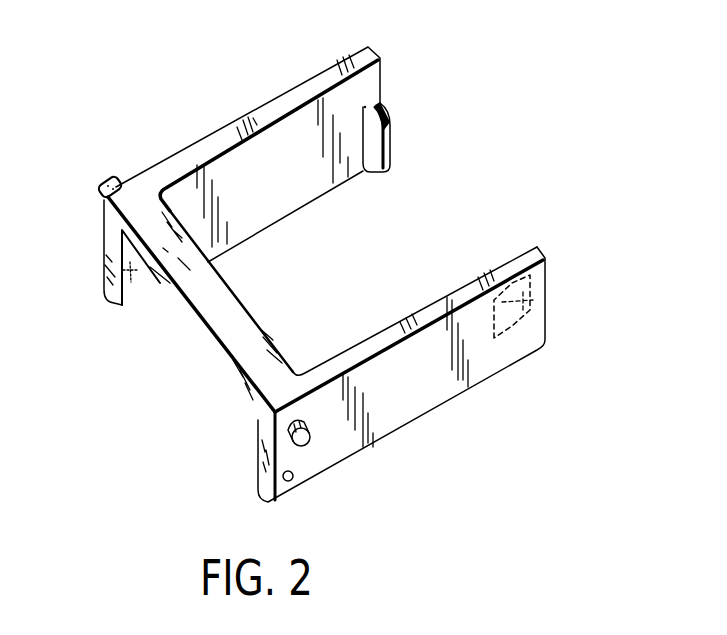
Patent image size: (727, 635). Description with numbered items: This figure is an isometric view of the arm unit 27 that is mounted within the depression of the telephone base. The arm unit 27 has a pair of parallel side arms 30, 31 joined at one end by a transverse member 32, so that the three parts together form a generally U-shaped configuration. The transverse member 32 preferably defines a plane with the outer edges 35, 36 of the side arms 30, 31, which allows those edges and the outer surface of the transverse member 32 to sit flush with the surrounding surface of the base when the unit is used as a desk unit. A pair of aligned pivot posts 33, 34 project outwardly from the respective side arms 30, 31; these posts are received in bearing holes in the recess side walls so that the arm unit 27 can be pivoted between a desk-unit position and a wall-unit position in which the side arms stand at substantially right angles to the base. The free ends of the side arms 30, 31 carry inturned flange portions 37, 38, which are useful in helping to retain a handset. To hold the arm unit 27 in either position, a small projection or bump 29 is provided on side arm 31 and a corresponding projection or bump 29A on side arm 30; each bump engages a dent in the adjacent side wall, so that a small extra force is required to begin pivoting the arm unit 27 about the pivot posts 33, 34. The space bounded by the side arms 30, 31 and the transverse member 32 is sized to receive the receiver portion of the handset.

The arm unit 27 is at (183, 383).
The projection or bump 29 is at (293, 480).
The projection or bump 29A is at (139, 305).
The side arm 30 is at (277, 147).
The side arm 31 is at (425, 396).
The transverse member 32 is at (228, 299).
The pivot post 33 is at (100, 178).
The pivot post 34 is at (292, 437).
The outer edge 35 is at (312, 85).
The outer edge 36 is at (445, 300).
The inturned flange portion 37 is at (392, 153).
The inturned flange portion 38 is at (547, 299).